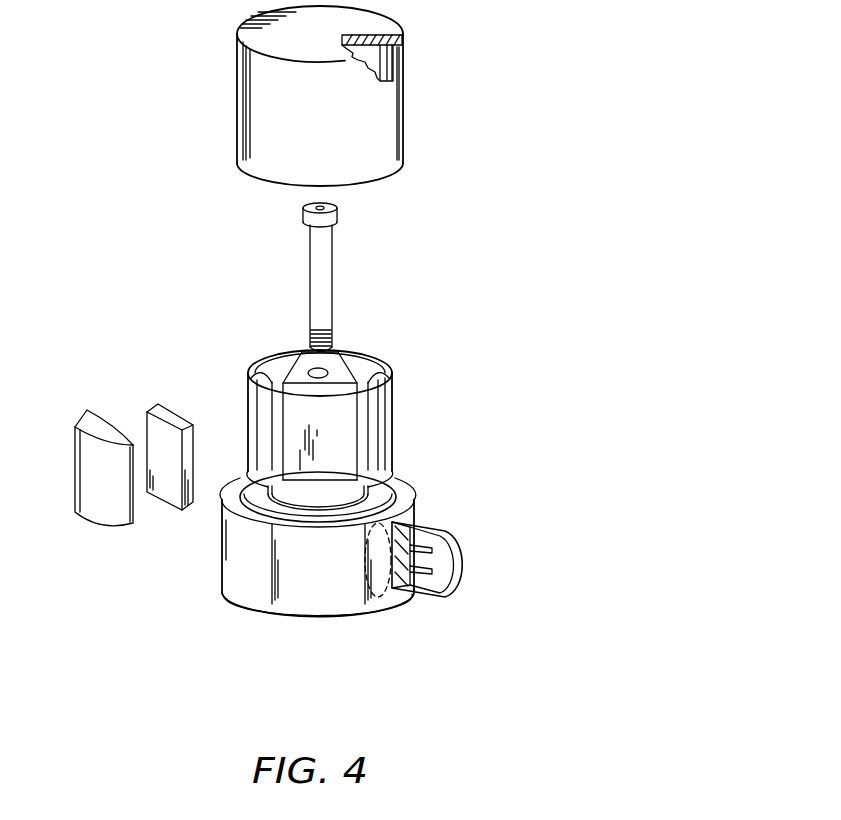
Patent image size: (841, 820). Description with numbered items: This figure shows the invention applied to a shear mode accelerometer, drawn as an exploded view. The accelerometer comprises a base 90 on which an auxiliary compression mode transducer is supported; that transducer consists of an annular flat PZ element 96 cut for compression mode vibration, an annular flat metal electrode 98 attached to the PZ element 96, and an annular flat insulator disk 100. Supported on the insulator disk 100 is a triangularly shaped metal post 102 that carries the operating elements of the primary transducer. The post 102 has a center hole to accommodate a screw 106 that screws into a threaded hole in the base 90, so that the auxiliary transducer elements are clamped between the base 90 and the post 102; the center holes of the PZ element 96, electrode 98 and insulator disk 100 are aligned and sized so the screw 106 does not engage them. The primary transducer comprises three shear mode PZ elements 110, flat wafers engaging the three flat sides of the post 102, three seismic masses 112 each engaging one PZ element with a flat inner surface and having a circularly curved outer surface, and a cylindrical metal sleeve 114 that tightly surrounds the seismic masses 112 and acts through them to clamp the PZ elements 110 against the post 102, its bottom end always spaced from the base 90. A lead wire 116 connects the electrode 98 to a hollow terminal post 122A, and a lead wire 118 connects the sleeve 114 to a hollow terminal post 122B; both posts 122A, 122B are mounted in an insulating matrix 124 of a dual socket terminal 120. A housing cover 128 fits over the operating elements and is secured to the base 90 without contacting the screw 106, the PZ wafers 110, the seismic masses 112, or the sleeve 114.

The base 90 is at (299, 560).
The annular flat PZ element 96 is at (268, 537).
The annular flat metal electrode 98 is at (338, 507).
The annular flat insulator disk 100 is at (333, 490).
The triangularly shaped metal post 102 is at (324, 409).
The screw 106 is at (323, 272).
The shear mode PZ elements 110 is at (153, 423).
The seismic masses 112 is at (83, 418).
The cylindrical metal sleeve 114 is at (263, 371).
The lead wire 116 is at (364, 612).
The lead wire 118 is at (400, 481).
The dual socket terminal 120 is at (459, 567).
The hollow terminal post 122A is at (432, 550).
The hollow terminal post 122B is at (432, 572).
The insulating matrix 124 is at (413, 528).
The housing cover 128 is at (383, 133).